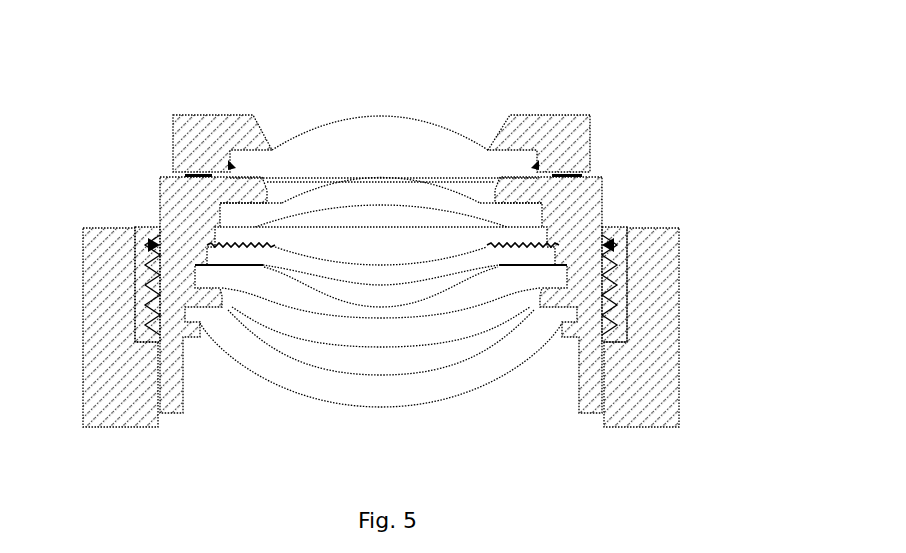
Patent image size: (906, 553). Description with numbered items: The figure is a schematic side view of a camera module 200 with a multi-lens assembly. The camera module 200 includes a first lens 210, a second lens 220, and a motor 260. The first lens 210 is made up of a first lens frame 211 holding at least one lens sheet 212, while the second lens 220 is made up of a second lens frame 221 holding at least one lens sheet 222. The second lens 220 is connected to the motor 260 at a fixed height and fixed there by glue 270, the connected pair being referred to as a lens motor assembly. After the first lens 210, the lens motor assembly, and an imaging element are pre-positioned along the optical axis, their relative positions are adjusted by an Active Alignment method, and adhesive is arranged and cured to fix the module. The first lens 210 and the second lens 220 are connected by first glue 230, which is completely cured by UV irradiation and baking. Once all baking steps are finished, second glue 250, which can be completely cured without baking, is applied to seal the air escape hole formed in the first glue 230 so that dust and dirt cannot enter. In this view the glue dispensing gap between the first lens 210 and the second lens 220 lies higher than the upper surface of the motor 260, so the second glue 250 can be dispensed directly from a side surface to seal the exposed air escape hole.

The camera module 200 is at (682, 93).
The first lens 210 is at (168, 138).
The first lens frame 211 is at (572, 128).
The lens sheet 212 is at (427, 120).
The second lens 220 is at (158, 203).
The second lens frame 221 is at (593, 200).
The lens sheet 222 is at (468, 380).
The first glue 230 is at (190, 173).
The second glue 250 is at (583, 175).
The motor 260 is at (662, 312).
The glue 270 is at (610, 242).